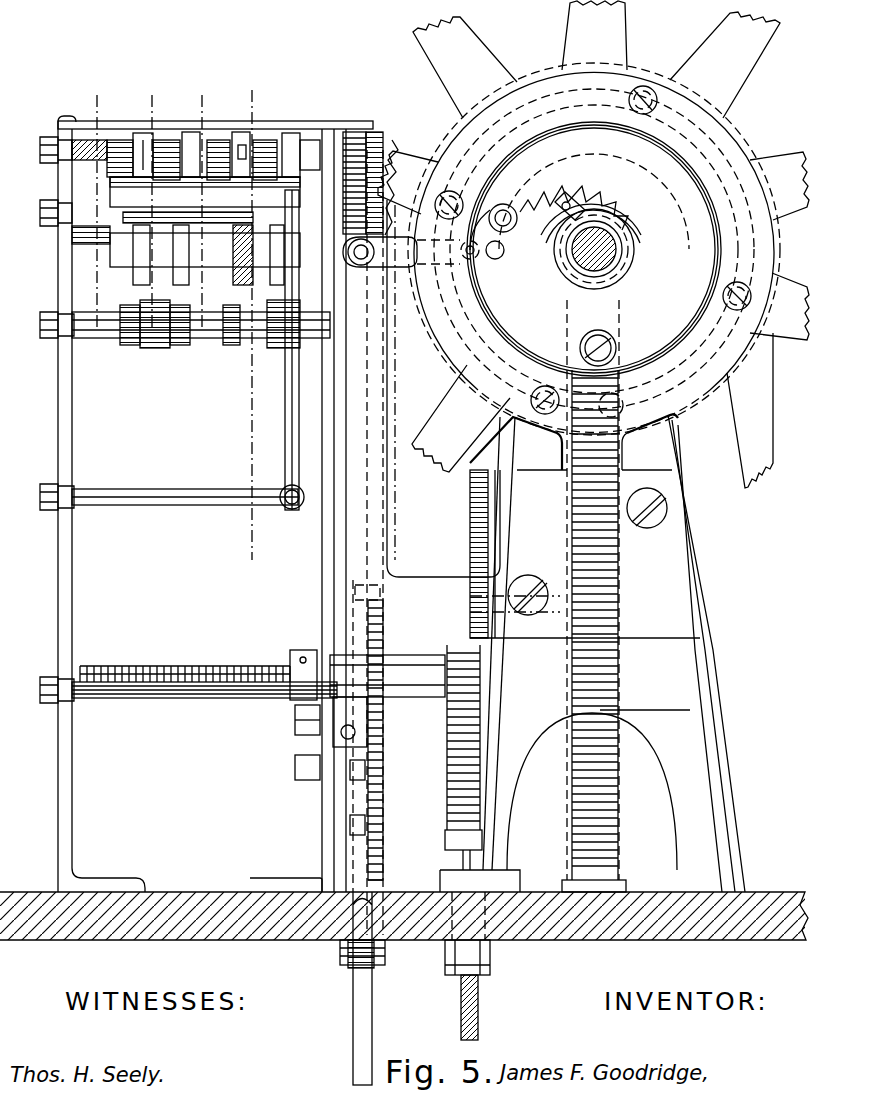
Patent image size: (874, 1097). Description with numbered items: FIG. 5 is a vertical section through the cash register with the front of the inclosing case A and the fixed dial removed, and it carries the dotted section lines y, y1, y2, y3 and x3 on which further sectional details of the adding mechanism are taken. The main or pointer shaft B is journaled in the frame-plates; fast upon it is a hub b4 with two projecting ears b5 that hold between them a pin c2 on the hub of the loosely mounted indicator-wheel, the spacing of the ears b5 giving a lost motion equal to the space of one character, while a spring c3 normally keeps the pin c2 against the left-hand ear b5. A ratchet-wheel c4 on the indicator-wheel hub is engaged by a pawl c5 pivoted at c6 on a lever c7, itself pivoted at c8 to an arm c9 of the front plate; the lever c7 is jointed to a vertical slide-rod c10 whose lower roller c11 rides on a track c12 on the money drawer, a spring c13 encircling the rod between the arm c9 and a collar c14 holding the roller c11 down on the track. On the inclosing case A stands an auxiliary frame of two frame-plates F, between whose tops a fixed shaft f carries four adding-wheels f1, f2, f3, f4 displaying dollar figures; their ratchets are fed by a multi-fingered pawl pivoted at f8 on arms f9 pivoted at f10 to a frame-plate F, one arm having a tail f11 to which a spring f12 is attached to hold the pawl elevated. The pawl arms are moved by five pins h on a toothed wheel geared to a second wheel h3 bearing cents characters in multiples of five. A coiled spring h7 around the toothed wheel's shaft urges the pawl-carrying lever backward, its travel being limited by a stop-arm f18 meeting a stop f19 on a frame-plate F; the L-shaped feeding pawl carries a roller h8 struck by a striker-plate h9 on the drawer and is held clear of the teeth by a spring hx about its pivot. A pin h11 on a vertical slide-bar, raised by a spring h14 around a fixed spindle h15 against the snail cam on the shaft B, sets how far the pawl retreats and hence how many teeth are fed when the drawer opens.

The inclosing case A is at (192, 892).
The frame-plates F is at (66, 570).
The main or pointer shaft B is at (594, 471).
The fixed shaft f is at (80, 235).
The adding-wheel f1 is at (295, 133).
The adding-wheel f2 is at (240, 132).
The adding-wheel f3 is at (188, 132).
The adding-wheel f4 is at (140, 134).
The pawl pivot f8 is at (132, 255).
The arms f9 is at (160, 345).
The arm pivot f10 is at (165, 348).
The depending tail portion f11 is at (285, 410).
The spring f12 is at (290, 512).
The stop-arm f18 is at (294, 718).
The stop f19 is at (294, 768).
The section line y is at (264, 315).
The section line y1 is at (214, 200).
The section line y2 is at (136, 200).
The section line y3 is at (72, 118).
The section line x3 is at (383, 133).
The pins h is at (348, 780).
The second wheel h3 is at (396, 152).
The coiled spring h7 is at (172, 665).
The roller h8 is at (350, 955).
The striker-plate h9 is at (372, 1026).
The projecting pin h11 is at (535, 582).
The spring h14 is at (612, 785).
The fixed spindle h15 is at (618, 820).
The spring hx is at (384, 845).
The hub b4 is at (640, 238).
The projecting ears b5 is at (550, 205).
The pin c2 is at (570, 196).
The spring c3 is at (505, 250).
The ratchet-wheel c4 is at (622, 190).
The pawl c5 is at (503, 204).
The pawl pivot c6 is at (455, 330).
The lever c7 is at (400, 237).
The lever pivot c8 is at (362, 266).
The arm c9 is at (366, 423).
The vertical slide-rod c10 is at (470, 522).
The roller c11 is at (458, 970).
The track c12 is at (478, 1010).
The spring c13 is at (452, 750).
The collar c14 is at (445, 845).